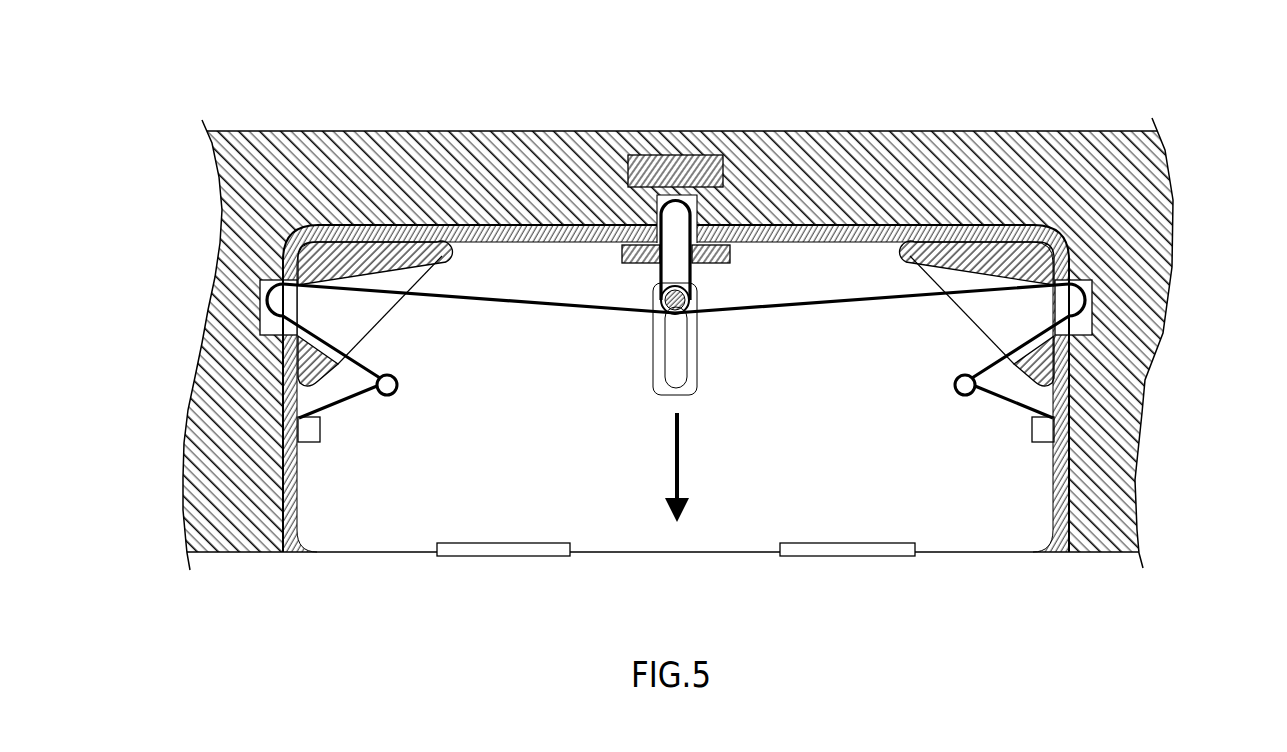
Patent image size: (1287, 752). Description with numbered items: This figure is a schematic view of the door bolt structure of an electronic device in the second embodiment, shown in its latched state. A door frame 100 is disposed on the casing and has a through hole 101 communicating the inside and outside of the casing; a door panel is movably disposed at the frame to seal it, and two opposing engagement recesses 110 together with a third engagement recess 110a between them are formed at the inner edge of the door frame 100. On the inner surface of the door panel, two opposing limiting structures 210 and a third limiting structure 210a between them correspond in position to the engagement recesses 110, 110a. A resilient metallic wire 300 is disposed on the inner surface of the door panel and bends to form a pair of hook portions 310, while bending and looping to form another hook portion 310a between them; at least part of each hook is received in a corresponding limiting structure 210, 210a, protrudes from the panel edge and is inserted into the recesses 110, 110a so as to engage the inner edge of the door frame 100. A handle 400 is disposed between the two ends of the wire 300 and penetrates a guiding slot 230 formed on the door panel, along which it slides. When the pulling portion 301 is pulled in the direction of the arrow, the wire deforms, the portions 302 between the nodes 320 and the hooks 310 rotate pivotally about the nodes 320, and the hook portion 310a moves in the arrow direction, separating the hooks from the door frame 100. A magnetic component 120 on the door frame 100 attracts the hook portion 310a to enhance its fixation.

The door frame 100 is at (995, 131).
The through hole 101 is at (1110, 378).
The engagement recess 110 is at (270, 322).
The third engagement recess 110a is at (692, 202).
The magnetic component 120 is at (642, 162).
The limiting structure 210 is at (432, 271).
The third limiting structure 210a is at (616, 256).
The guiding slot 230 is at (663, 338).
The resilient metallic wire 300 is at (843, 305).
The pulling portion 301 is at (676, 316).
The portion of the resilient metallic wire 302 is at (341, 371).
The hook portion 310 is at (258, 292).
The hook portion 310a is at (676, 197).
The node 320 is at (396, 392).
The handle 400 is at (690, 290).